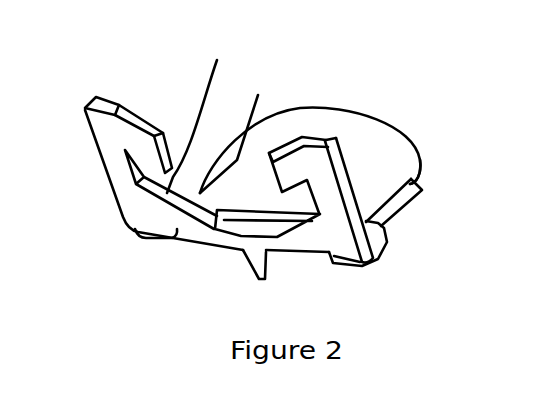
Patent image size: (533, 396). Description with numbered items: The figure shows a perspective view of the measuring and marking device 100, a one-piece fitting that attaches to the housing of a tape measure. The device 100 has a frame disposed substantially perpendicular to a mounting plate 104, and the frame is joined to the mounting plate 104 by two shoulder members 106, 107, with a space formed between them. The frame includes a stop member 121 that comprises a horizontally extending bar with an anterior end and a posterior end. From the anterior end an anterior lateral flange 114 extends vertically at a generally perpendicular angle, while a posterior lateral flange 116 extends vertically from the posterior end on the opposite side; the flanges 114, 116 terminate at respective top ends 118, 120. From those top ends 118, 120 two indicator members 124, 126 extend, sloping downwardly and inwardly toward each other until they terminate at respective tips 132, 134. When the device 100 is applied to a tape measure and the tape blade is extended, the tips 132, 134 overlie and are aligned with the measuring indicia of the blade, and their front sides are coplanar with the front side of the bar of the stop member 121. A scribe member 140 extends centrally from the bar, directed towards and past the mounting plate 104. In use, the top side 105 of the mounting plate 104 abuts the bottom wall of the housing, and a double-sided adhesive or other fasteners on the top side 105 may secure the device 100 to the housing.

The measuring and marking device 100 is at (416, 66).
The mounting plate 104 is at (411, 183).
The top side 105 is at (310, 129).
The shoulder member 106 is at (153, 238).
The shoulder member 107 is at (360, 262).
The anterior lateral flange 114 is at (133, 203).
The posterior lateral flange 116 is at (323, 190).
The top end 118 is at (100, 100).
The top end 120 is at (316, 160).
The stop member 121 is at (317, 240).
The indicator member 124 is at (97, 131).
The indicator member 126 is at (316, 162).
The tip 132 is at (217, 116).
The tip 134 is at (302, 158).
The scribe member 140 is at (244, 284).